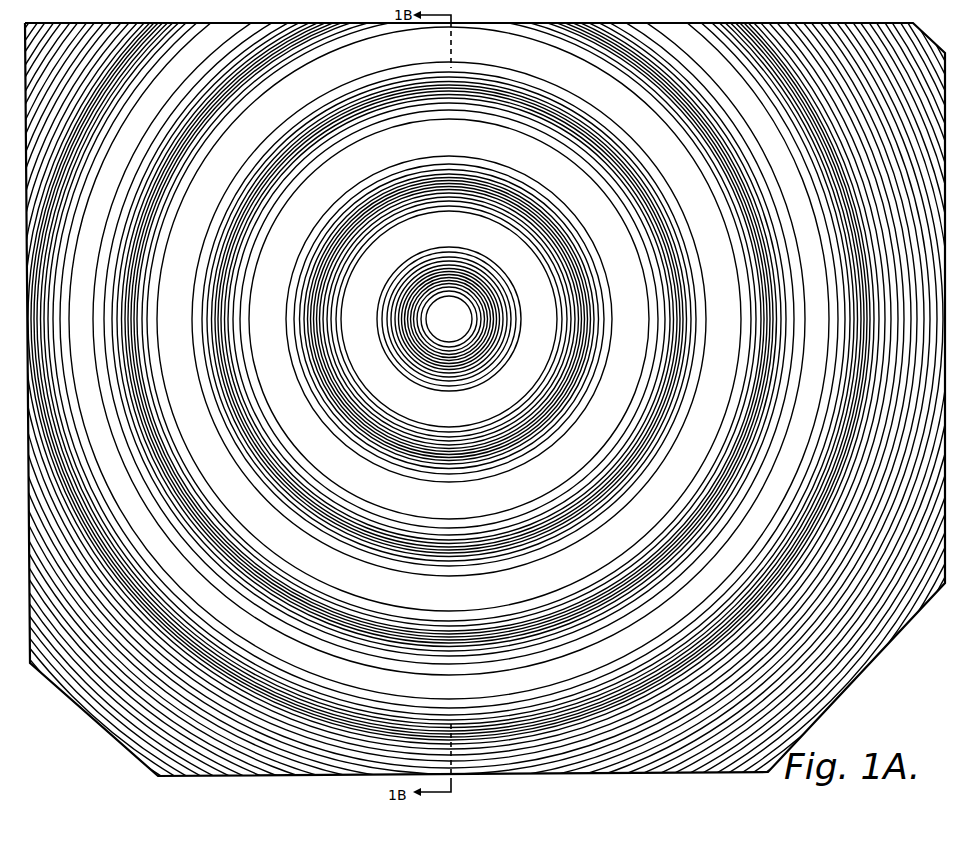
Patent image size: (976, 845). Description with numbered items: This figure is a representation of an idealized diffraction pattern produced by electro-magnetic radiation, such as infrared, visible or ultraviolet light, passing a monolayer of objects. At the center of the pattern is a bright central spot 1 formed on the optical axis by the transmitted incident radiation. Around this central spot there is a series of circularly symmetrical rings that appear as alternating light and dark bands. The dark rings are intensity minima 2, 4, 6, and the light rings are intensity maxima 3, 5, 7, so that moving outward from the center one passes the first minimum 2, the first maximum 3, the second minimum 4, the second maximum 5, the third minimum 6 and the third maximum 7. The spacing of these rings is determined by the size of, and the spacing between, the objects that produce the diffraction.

The central zone 1 is at (440, 308).
The minimum 2 is at (487, 302).
The maximum 3 is at (528, 320).
The minimum 4 is at (577, 305).
The maximum 5 is at (622, 306).
The minimum 6 is at (668, 320).
The maximum 7 is at (712, 312).